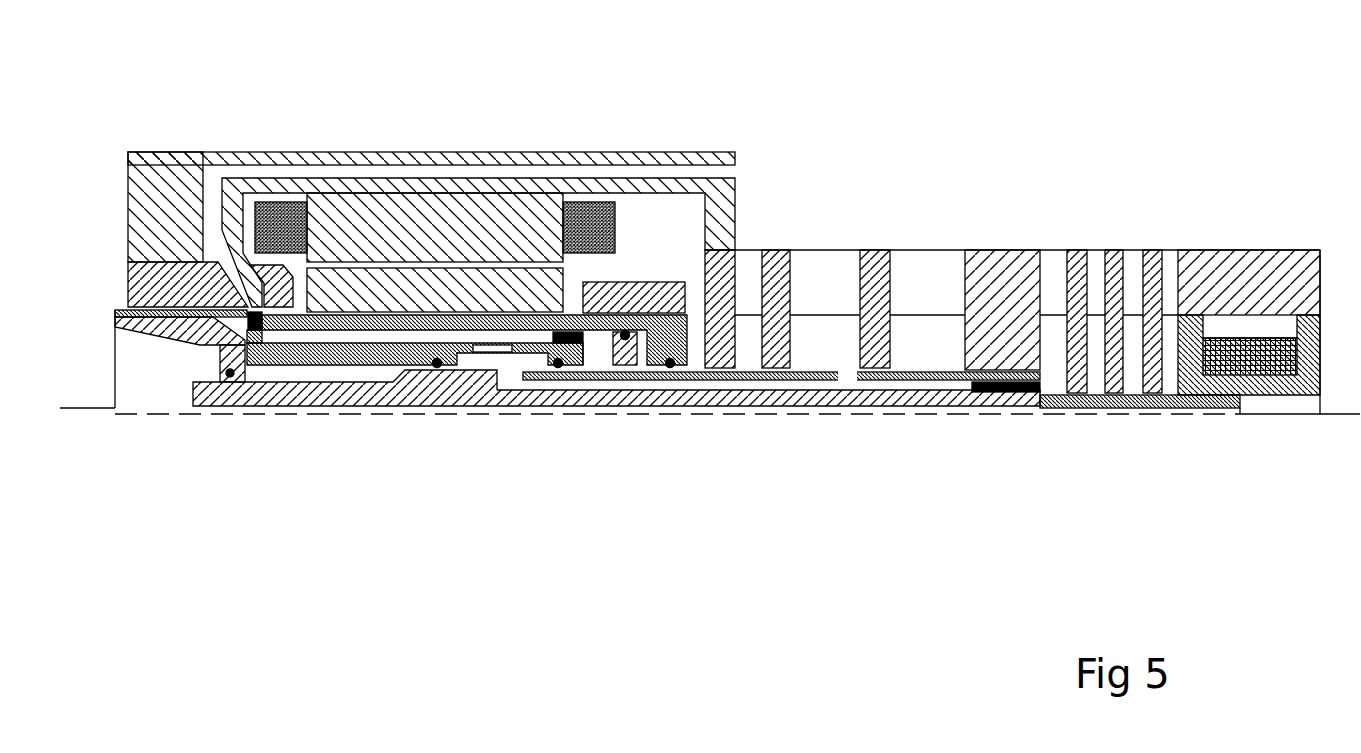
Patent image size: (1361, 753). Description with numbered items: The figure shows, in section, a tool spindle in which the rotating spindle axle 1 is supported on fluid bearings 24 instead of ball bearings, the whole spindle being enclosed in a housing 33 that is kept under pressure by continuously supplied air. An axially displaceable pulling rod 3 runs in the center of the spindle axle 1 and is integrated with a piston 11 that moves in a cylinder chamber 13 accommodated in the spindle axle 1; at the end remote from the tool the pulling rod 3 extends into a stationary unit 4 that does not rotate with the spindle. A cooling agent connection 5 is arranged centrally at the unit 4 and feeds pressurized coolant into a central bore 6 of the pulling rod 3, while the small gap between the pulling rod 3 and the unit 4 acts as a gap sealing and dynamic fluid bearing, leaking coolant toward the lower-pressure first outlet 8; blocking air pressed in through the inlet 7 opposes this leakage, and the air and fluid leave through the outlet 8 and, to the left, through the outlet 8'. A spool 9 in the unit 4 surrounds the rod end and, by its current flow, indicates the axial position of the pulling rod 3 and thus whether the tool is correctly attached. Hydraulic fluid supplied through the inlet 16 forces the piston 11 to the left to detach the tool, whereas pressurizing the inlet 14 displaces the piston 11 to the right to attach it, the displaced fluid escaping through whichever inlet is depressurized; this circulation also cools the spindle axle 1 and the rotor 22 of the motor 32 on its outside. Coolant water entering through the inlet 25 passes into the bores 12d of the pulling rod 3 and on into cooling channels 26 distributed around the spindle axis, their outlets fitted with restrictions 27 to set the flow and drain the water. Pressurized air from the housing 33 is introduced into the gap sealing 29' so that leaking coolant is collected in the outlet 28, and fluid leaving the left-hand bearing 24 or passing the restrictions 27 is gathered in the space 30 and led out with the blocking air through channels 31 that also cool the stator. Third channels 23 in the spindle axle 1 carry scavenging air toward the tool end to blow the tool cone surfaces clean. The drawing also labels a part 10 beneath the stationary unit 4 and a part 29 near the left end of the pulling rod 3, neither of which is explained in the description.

The spindle axle 1 is at (195, 333).
The pulling rod 3 is at (417, 385).
The stationary unit 4 is at (1230, 267).
The cooling agent connection 5 is at (1303, 398).
The central bore 6 is at (665, 403).
The inlet 7 is at (1133, 280).
The first outlet 8 is at (1172, 271).
The outlet 8' is at (1102, 271).
The spool 9 is at (1250, 347).
The support plate 10 is at (1212, 408).
The piston 11 is at (625, 353).
The bores 12d is at (865, 385).
The cylinder chamber 13 is at (597, 343).
The inlet 14 is at (923, 287).
The inlet 16 is at (1051, 280).
The rotor 22 is at (455, 287).
The third channels 23 is at (235, 365).
The fluid bearing 24 is at (638, 290).
The inlet 25 is at (825, 277).
The cooling channels 26 is at (473, 340).
The restrictions 27 is at (248, 337).
The outlet 28 is at (748, 290).
The seal 29 is at (323, 410).
The gap sealing 29' is at (781, 482).
The space 30 is at (255, 312).
The channels 31 is at (283, 168).
The motor 32 is at (437, 213).
The housing 33 is at (483, 153).